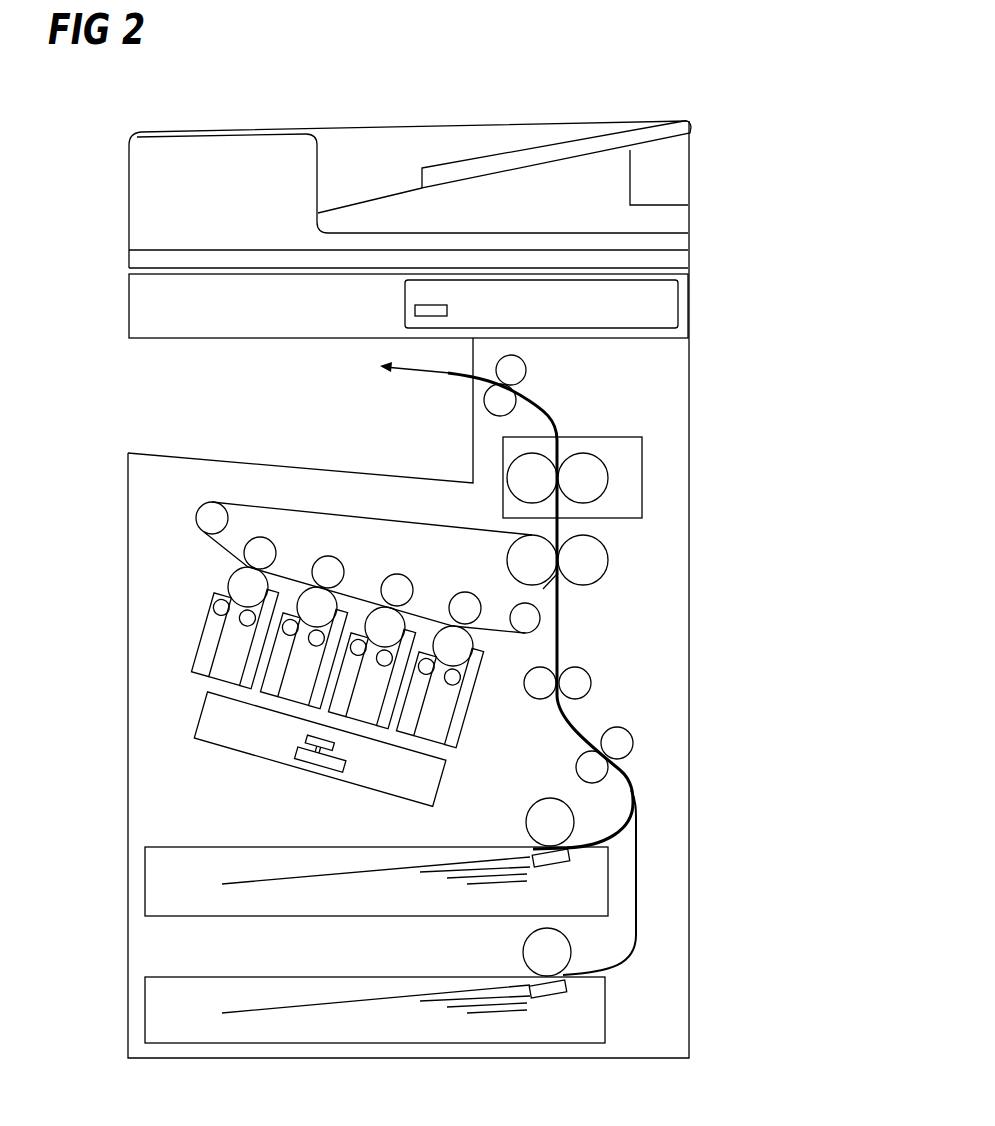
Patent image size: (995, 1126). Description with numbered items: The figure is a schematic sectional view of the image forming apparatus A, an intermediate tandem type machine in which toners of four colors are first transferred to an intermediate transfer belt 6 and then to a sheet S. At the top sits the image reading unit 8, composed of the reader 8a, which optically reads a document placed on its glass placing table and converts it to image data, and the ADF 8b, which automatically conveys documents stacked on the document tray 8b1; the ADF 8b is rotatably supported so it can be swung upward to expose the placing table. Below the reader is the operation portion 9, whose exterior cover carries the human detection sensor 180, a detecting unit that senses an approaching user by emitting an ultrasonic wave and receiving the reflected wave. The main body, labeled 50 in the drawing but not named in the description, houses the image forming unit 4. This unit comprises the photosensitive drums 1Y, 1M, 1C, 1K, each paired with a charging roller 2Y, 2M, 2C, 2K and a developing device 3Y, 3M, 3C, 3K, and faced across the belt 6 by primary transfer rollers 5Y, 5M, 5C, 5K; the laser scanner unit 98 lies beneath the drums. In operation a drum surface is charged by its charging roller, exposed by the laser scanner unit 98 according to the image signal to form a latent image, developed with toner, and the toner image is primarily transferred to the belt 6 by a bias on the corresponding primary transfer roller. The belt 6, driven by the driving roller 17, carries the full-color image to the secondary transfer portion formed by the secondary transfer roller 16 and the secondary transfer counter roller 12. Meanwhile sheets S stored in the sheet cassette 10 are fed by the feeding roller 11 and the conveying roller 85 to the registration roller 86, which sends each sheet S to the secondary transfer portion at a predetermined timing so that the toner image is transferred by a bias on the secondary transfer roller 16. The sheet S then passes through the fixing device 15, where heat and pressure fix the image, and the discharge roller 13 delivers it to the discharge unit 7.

The image forming apparatus A is at (599, 82).
The image reading unit 8 is at (366, 175).
The reader 8a is at (378, 269).
The ADF (Automatic Document Feeder) 8b is at (379, 160).
The document tray 8b1 is at (472, 157).
The operation portion 9 is at (434, 306).
The human detection sensor 180 is at (415, 310).
The image forming apparatus main body 50 is at (127, 513).
The discharge unit 7 is at (350, 473).
The discharge roller 13 is at (522, 363).
The fixing device 15 is at (642, 452).
The secondary transfer roller 16 is at (600, 553).
The secondary transfer counter roller 12 is at (560, 597).
The intermediate transfer belt 6 is at (457, 527).
The driving roller 17 is at (210, 502).
The image forming unit 4 is at (186, 551).
The photosensitive drum 1Y is at (248, 587).
The photosensitive drum 1M is at (317, 607).
The photosensitive drum 1C is at (385, 627).
The photosensitive drum 1K is at (453, 646).
The primary transfer roller 5Y is at (259, 537).
The primary transfer roller 5M is at (327, 556).
The primary transfer roller 5C is at (395, 575).
The primary transfer roller 5K is at (463, 592).
The developing device 3Y is at (212, 637).
The developing device 3M is at (285, 632).
The developing device 3C is at (356, 658).
The developing device 3K is at (422, 678).
The charging roller 2Y is at (249, 626).
The charging roller 2M is at (312, 645).
The charging roller 2C is at (380, 667).
The charging roller 2K is at (452, 686).
The laser scanner unit 98 is at (248, 740).
The registration roller 86 is at (580, 692).
The conveying roller 85 is at (625, 748).
The feeding roller 11 is at (541, 812).
The sheet cassette 10 is at (144, 882).
The sheet S is at (398, 880).